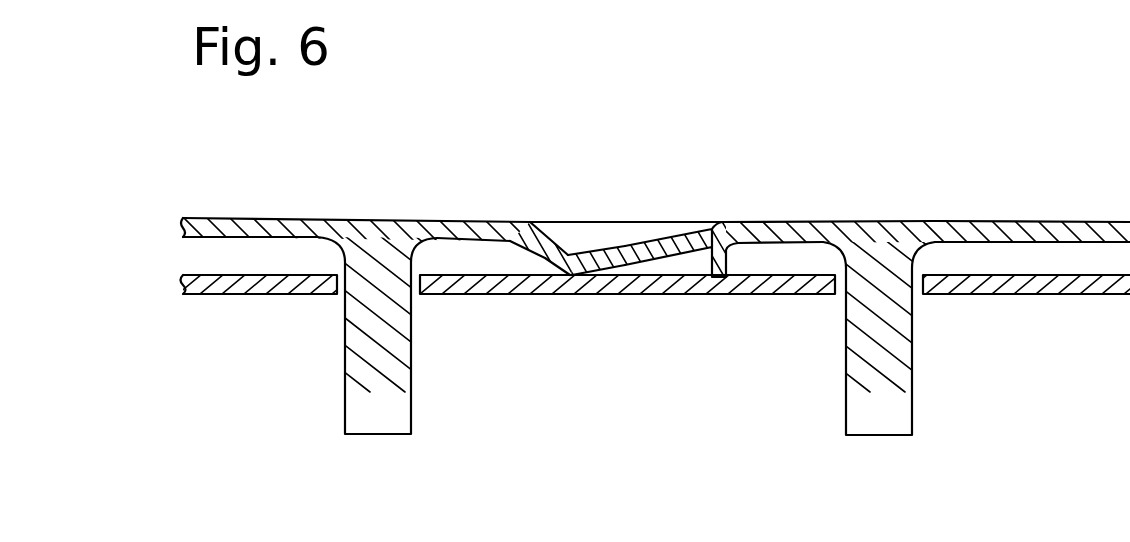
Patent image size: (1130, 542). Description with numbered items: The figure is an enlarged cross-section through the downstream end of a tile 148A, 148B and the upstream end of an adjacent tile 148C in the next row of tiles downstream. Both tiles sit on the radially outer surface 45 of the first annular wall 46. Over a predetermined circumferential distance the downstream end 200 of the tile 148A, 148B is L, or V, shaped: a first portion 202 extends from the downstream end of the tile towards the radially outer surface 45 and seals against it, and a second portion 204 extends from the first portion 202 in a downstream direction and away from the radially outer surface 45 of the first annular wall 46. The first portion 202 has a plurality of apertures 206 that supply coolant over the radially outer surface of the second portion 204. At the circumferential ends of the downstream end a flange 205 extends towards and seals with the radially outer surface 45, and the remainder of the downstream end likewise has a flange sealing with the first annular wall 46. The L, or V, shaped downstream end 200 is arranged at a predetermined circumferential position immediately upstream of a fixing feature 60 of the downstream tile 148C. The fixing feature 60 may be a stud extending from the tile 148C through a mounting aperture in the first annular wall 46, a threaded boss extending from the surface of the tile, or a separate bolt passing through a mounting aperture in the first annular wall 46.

The tile 148A is at (295, 218).
The tile 148B is at (546, 192).
The tile 148C is at (1078, 222).
The downstream end 200 is at (638, 165).
The first portion 202 is at (545, 217).
The second portion 204 is at (650, 230).
The flange 205 is at (597, 221).
The apertures 206 is at (568, 213).
The radially outer surface 45 is at (276, 259).
The first annular wall 46 is at (477, 283).
The fixing feature 60 is at (393, 387).